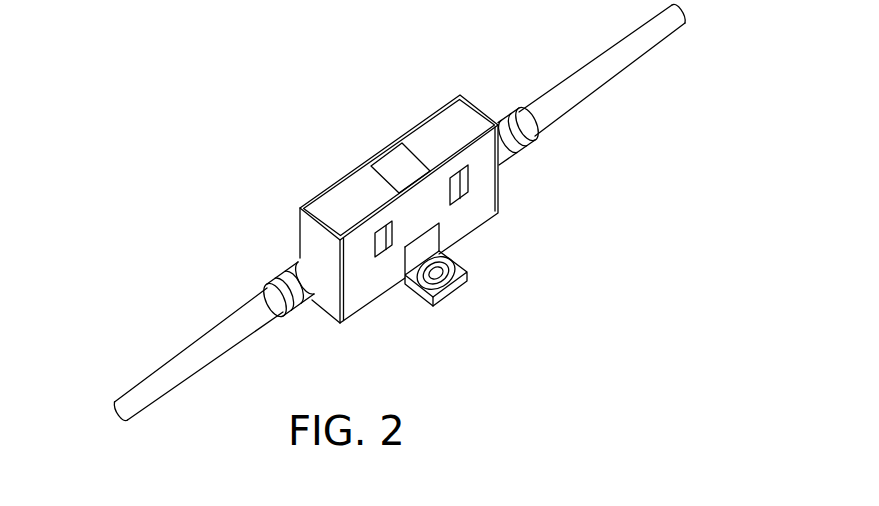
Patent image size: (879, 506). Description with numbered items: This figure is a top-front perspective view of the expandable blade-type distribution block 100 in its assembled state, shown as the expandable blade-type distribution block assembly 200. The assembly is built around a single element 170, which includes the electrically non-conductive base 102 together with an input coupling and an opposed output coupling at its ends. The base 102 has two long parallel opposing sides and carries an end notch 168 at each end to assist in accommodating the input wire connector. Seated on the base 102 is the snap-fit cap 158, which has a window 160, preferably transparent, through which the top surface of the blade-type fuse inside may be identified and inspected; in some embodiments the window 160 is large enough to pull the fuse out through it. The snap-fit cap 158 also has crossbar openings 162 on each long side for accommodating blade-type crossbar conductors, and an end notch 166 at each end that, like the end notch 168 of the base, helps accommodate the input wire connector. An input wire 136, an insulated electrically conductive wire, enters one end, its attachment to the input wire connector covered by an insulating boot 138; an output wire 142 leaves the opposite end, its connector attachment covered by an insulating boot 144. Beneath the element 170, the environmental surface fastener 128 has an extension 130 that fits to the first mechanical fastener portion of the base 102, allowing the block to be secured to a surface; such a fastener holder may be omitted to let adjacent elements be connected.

The expandable blade-type distribution block 100 is at (215, 69).
The base 102 is at (493, 198).
The environmental surface fastener 128 is at (462, 277).
The extension 130 is at (422, 242).
The input wire 136 is at (235, 327).
The insulating boot 138 is at (283, 270).
The output wire 142 is at (588, 80).
The insulating boot 144 is at (523, 135).
The snap-fit cap 158 is at (347, 197).
The window 160 is at (397, 170).
The crossbar openings 162 is at (462, 190).
The end notch 166 is at (304, 256).
The end notch 168 is at (332, 287).
The single element 170 is at (392, 307).
The expandable blade-type distribution block assembly 200 is at (573, 231).